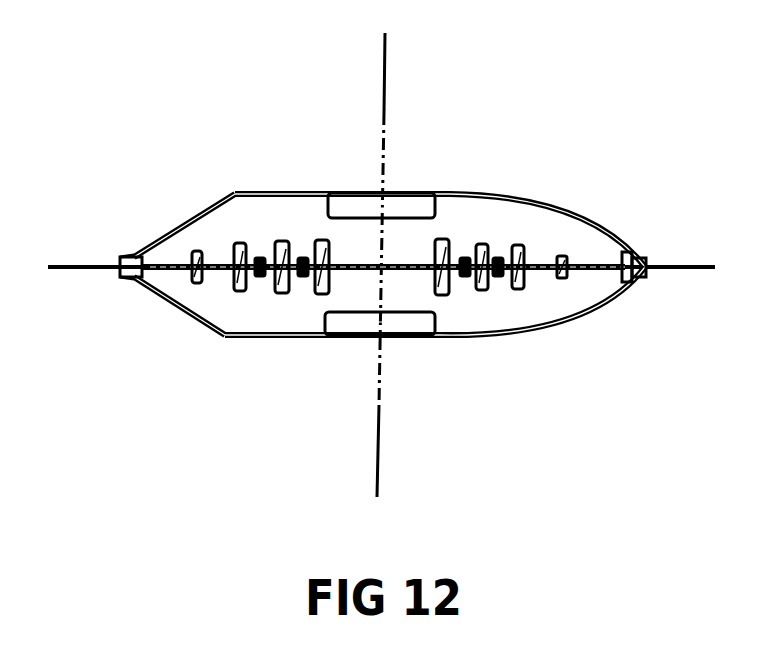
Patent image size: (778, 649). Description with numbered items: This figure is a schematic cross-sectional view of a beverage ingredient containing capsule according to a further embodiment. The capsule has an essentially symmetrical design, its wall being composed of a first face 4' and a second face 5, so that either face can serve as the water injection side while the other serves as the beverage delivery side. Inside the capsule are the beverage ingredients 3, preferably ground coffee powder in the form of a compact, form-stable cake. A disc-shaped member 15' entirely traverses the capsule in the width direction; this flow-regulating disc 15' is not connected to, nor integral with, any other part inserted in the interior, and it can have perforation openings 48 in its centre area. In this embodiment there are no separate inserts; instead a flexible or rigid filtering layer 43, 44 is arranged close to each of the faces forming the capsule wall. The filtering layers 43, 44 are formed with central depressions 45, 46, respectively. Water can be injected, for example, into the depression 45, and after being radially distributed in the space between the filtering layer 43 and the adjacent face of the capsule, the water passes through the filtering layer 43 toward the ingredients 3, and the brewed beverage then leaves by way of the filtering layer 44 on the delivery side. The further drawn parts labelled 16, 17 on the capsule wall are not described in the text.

The beverage ingredients 3 is at (248, 222).
The first face 4' is at (547, 187).
The second face 5 is at (497, 340).
The disc-shaped member 15' is at (639, 228).
The upper front housing wall 16 is at (188, 232).
The lower front housing wall 17 is at (220, 312).
The filtering layer 43 is at (437, 205).
The filtering layer 44 is at (325, 322).
The central depression 45 is at (401, 200).
The central depression 46 is at (403, 330).
The perforation openings 48 is at (345, 258).